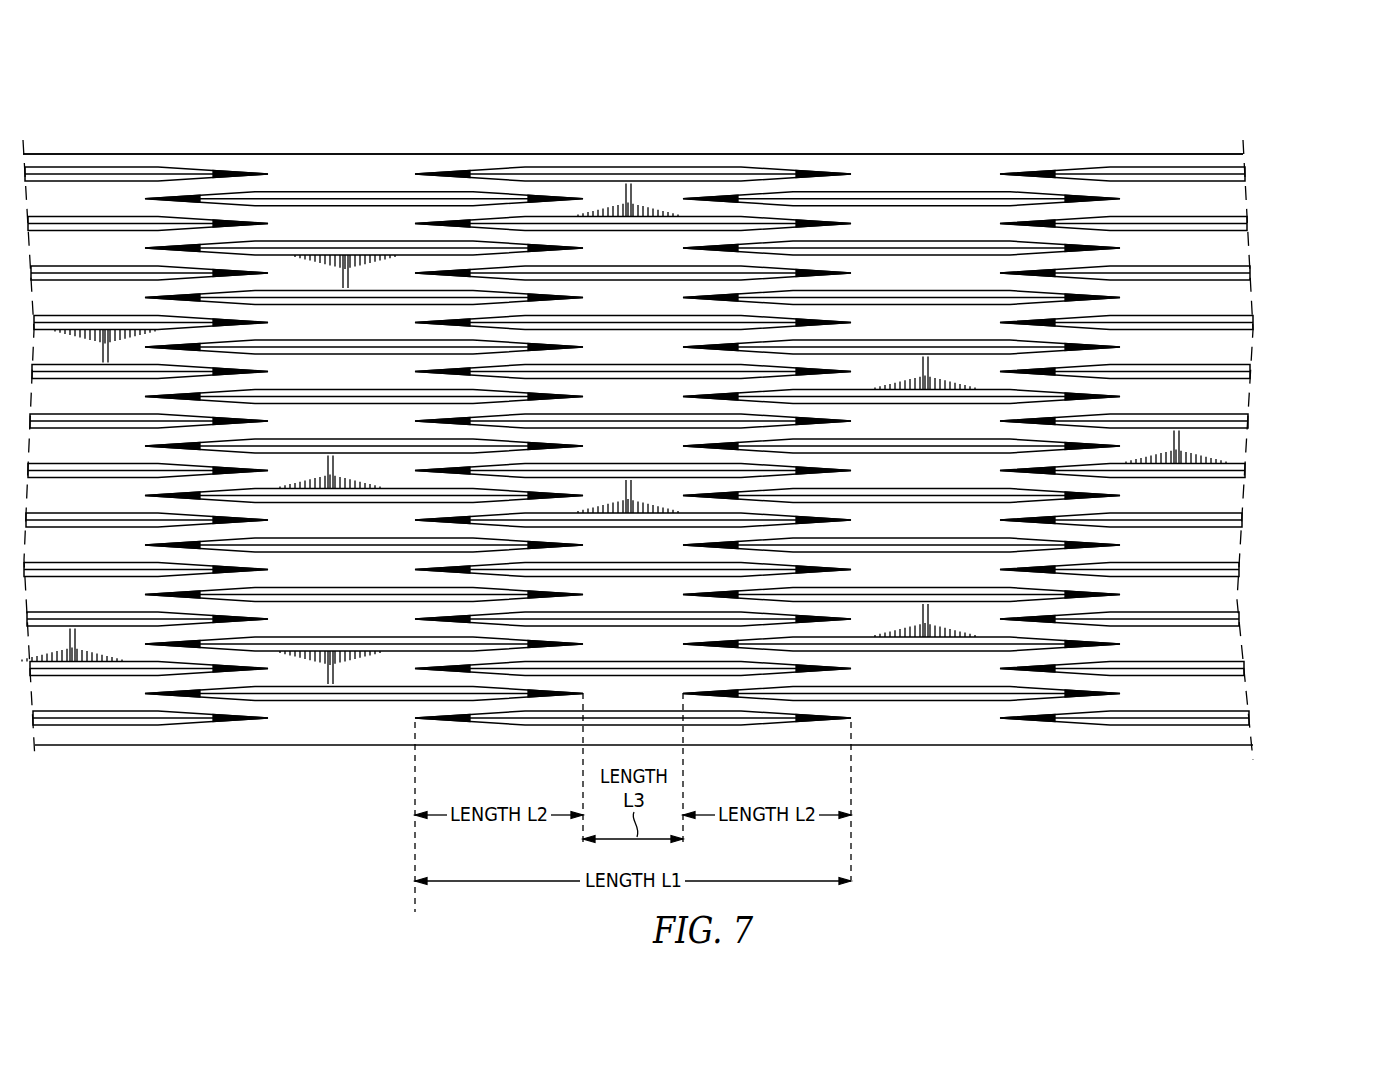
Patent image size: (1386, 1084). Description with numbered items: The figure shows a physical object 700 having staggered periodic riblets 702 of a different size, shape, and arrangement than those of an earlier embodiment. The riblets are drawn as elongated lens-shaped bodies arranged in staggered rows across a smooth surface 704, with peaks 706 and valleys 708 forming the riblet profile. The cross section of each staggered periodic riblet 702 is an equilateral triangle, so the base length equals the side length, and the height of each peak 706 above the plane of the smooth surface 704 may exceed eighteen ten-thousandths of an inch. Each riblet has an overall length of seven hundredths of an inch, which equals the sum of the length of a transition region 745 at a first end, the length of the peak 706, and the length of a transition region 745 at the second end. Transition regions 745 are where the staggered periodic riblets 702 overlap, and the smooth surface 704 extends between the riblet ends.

The physical object 700 is at (1234, 115).
The staggered periodic riblets 702 is at (645, 167).
The smooth surface 704 is at (1178, 188).
The peaks 706 is at (1160, 173).
The valleys 708 is at (1225, 280).
The transition regions 745 is at (216, 171).